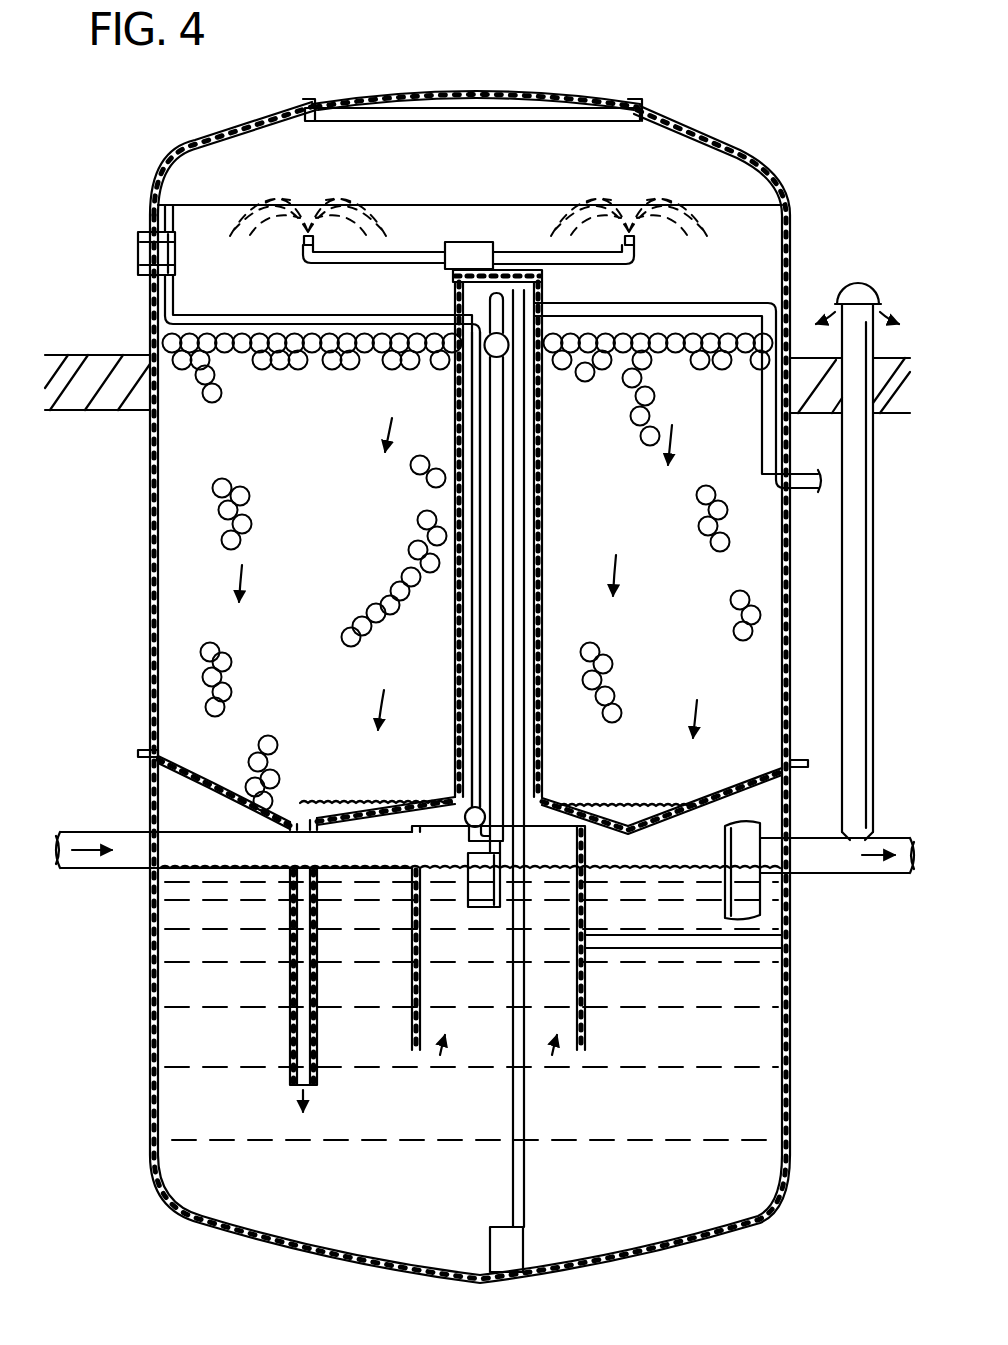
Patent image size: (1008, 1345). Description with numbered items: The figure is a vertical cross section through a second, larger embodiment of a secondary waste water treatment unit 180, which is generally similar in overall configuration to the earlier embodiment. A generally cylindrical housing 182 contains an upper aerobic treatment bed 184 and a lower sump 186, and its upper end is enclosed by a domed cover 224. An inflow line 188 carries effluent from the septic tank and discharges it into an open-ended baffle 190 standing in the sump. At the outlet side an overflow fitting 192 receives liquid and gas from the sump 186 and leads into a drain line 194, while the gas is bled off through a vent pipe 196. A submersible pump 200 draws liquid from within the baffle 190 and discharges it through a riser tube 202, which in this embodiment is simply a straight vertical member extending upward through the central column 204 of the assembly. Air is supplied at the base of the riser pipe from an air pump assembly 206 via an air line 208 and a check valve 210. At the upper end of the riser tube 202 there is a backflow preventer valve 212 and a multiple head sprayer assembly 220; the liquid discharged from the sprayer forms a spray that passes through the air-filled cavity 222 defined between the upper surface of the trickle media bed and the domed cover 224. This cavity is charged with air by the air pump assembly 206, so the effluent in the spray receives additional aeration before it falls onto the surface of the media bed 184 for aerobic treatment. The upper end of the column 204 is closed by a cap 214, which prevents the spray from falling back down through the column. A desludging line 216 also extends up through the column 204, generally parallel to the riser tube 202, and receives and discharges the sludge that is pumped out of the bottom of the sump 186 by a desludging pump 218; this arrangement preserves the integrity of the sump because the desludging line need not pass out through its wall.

The secondary treatment unit 180 is at (362, 76).
The cylindrical housing 182 is at (158, 336).
The upper aerobic treatment bed 184 is at (348, 533).
The lower sump 186 is at (660, 1120).
The inflow line 188 is at (121, 834).
The open-ended baffle 190 is at (580, 1018).
The overflow fitting 192 is at (772, 895).
The drain line 194 is at (880, 870).
The vent pipe 196 is at (843, 672).
The submersible pump 200 is at (467, 858).
The riser tube 202 is at (497, 428).
The column 204 is at (540, 448).
The air pump assembly 206 is at (140, 250).
The air line 208 is at (478, 480).
The check valve 210 is at (466, 812).
The backflow preventer valve 212 is at (488, 360).
The cap 214 is at (448, 285).
The desludging line 216 is at (525, 515).
The desludging pump 218 is at (496, 1252).
The multiple head sprayer assembly 220 is at (243, 195).
The air-filled cavity 222 is at (282, 148).
The domed cover 224 is at (228, 134).